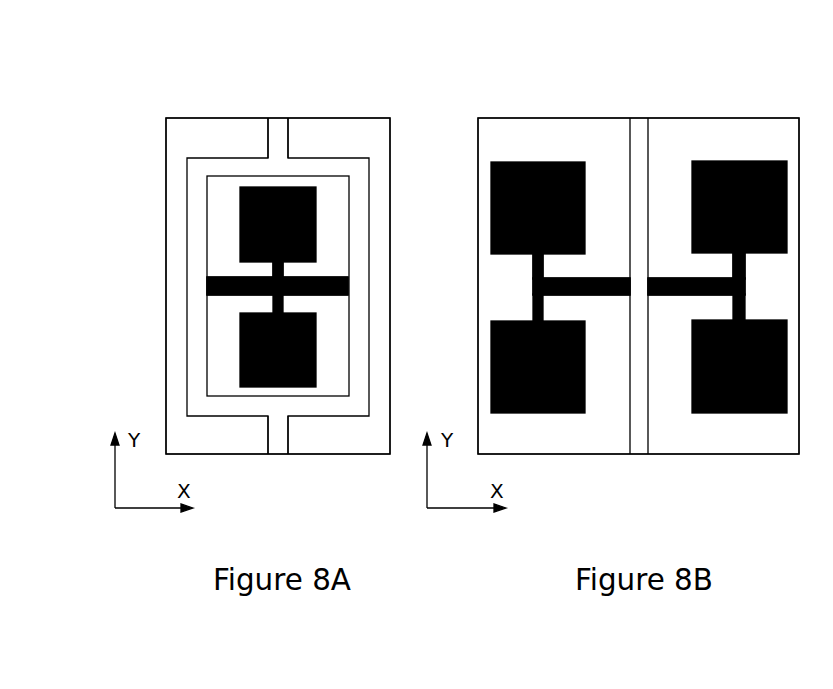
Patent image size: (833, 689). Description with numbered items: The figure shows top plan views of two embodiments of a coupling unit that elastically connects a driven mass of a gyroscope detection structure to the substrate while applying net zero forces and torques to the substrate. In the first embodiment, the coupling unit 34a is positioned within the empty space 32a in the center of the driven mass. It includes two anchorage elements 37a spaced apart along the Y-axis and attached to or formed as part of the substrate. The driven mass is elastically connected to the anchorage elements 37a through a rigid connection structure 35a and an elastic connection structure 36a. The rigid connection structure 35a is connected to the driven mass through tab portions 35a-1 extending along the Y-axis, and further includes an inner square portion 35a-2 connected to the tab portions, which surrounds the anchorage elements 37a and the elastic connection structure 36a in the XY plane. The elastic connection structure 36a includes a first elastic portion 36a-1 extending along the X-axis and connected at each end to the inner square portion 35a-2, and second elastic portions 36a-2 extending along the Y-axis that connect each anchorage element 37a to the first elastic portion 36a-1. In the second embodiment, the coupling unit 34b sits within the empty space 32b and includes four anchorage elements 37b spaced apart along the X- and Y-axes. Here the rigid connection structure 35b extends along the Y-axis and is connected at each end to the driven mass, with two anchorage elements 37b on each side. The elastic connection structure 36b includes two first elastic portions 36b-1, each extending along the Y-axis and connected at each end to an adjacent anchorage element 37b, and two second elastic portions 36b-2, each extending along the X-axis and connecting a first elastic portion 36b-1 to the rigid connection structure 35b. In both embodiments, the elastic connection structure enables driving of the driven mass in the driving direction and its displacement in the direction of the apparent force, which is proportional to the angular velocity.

In FIG. 8A, the empty space 32a is at (326, 118).
In FIG. 8A, the coupling unit 34a is at (200, 132).
In FIG. 8A, the rigid connection structure 35a is at (252, 134).
In FIG. 8A, the tab portions 35a-1 is at (278, 130).
In FIG. 8A, the inner square portion 35a-2 is at (196, 178).
In FIG. 8A, the elastic connection structure 36a is at (334, 258).
In FIG. 8A, the first elastic portion 36a-1 is at (225, 297).
In FIG. 8A, the second elastic portion 36a-2 is at (275, 264).
In FIG. 8A, the anchorage elements 37a is at (240, 222).
In FIG. 8B, the empty space 32b is at (670, 118).
In FIG. 8B, the coupling unit 34b is at (532, 134).
In FIG. 8B, the rigid connection structure 35b is at (637, 130).
In FIG. 8B, the elastic connection structure 36b is at (603, 265).
In FIG. 8B, the first elastic portions 36b-1 is at (540, 265).
In FIG. 8B, the second elastic portions 36b-2 is at (605, 295).
In FIG. 8B, the anchorage elements 37b is at (547, 162).